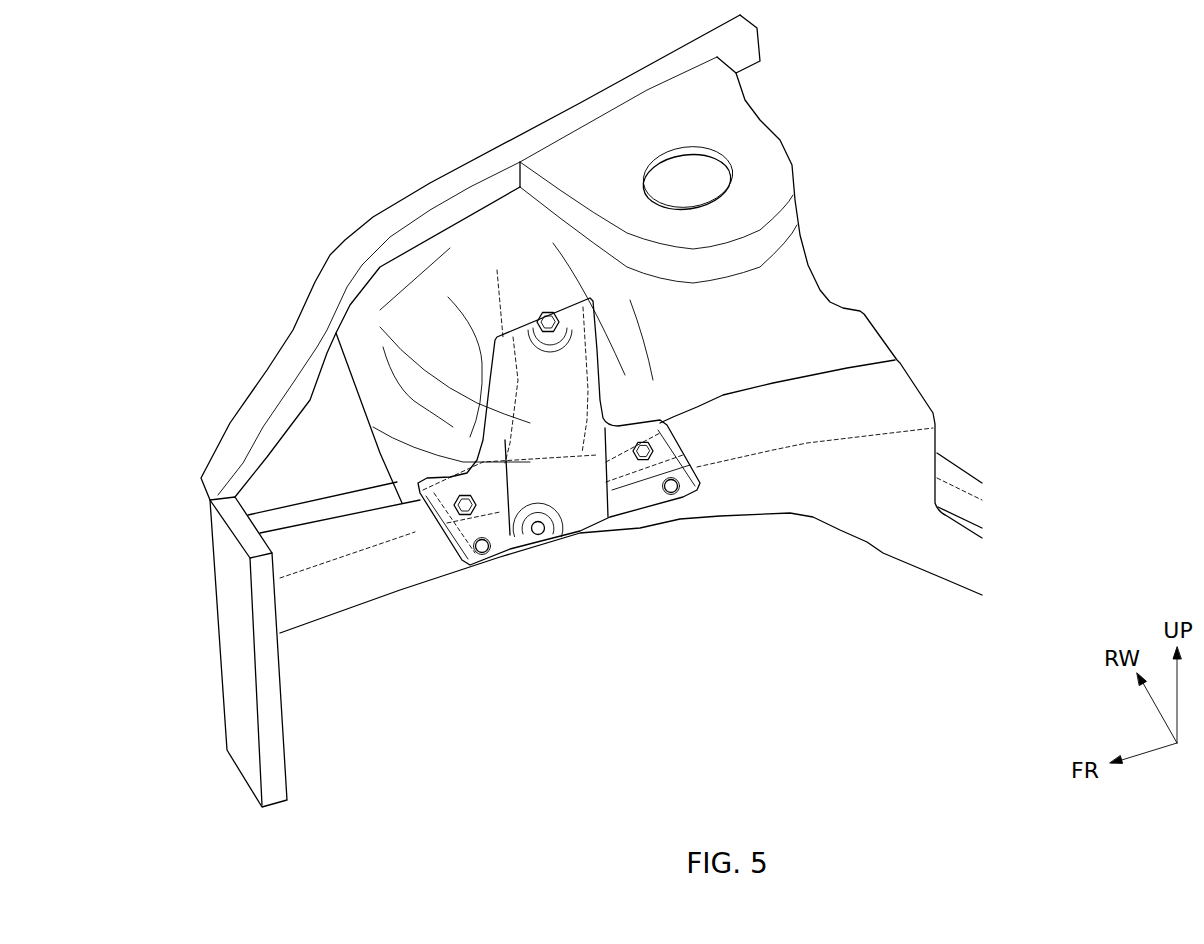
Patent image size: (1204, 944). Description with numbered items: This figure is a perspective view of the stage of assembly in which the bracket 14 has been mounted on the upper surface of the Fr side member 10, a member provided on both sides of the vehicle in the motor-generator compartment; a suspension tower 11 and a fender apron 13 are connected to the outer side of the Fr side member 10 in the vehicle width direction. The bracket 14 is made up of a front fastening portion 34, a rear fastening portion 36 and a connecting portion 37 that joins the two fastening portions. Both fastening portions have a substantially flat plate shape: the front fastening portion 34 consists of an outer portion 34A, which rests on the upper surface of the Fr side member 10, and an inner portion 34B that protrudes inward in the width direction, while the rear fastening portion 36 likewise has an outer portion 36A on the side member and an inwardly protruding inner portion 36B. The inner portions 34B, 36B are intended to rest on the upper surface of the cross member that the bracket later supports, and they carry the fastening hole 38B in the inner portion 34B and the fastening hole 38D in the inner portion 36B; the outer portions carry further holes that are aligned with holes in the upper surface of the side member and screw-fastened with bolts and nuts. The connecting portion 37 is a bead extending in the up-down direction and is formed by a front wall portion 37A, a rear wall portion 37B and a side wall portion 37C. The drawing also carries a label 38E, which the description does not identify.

The Fr side member 10 is at (831, 530).
The suspension tower 11 is at (725, 122).
The fender apron 13 is at (522, 275).
The bracket 14 is at (601, 510).
The front fastening portion 34 is at (471, 608).
The outer portion 34A is at (422, 498).
The inner portion 34B is at (462, 552).
The rear fastening portion 36 is at (697, 551).
The outer portion 36A is at (623, 463).
The inner portion 36B is at (643, 493).
The connecting portion 37 is at (367, 57).
The front wall portion 37A is at (470, 218).
The rear wall portion 37B is at (373, 427).
The side wall portion 37C is at (380, 327).
The fastening hole 38B is at (478, 557).
The fastening hole 38D is at (683, 500).
The bolt hole 38E is at (541, 542).